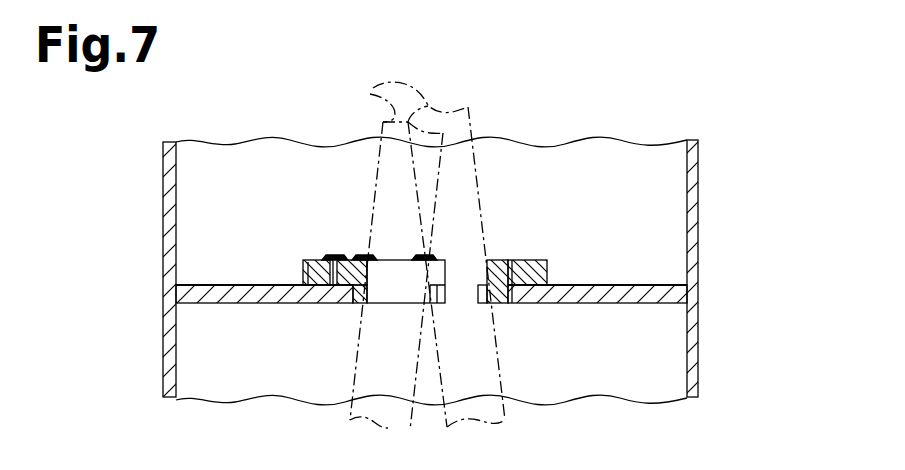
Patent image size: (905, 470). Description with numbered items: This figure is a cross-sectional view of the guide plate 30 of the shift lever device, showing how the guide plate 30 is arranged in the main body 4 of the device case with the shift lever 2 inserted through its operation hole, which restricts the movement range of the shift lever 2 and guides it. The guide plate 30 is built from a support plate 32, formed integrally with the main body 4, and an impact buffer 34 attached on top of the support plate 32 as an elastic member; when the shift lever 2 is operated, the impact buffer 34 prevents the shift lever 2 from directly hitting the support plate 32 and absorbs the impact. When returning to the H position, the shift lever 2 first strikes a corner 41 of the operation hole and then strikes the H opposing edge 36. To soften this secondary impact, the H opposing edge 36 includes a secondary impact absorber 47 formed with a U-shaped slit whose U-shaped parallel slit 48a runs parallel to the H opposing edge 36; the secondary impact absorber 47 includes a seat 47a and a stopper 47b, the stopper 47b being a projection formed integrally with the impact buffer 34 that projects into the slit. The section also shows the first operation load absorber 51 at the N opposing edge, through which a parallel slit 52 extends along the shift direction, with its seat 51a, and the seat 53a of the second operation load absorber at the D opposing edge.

The shift lever 2 is at (373, 88).
The main body 4 is at (698, 197).
The guide plate 30 is at (431, 250).
The support plate 32 is at (635, 284).
The impact buffer 34 is at (538, 261).
The H opposing edge 36 is at (489, 303).
The corner 41 is at (423, 288).
The secondary impact absorber 47 is at (513, 226).
The seat 47a is at (487, 264).
The stopper 47b is at (528, 259).
The U-shaped parallel slit 48a is at (509, 258).
The first operation load absorber 51 is at (355, 262).
The seat 51a is at (363, 291).
The parallel slit 52 is at (328, 256).
The seat 53a is at (397, 278).